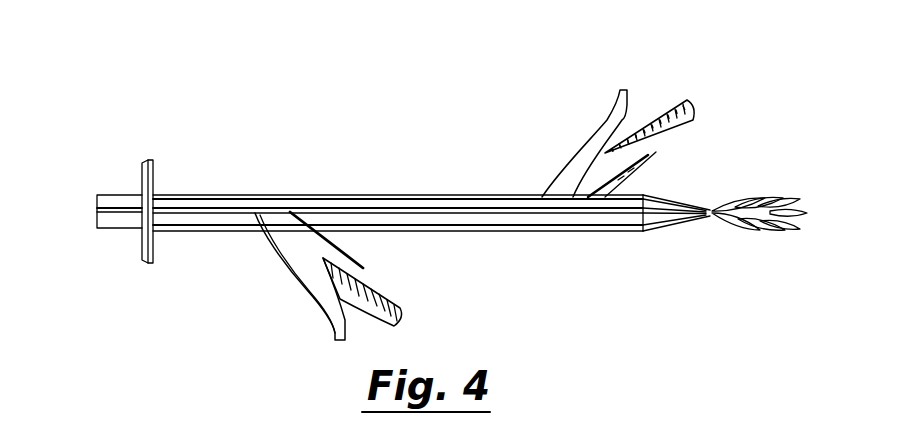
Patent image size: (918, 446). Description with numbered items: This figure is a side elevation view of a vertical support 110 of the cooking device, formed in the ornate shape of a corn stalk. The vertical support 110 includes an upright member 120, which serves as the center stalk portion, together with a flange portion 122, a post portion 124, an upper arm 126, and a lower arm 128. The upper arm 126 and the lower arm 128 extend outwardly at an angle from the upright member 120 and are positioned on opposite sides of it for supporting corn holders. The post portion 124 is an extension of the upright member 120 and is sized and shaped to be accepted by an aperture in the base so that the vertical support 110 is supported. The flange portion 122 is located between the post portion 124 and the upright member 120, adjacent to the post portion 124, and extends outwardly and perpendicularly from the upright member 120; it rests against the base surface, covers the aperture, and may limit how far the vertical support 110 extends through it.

The vertical support 110 is at (582, 91).
The upright member 120 is at (338, 198).
The flange portion 122 is at (151, 161).
The post portion 124 is at (127, 218).
The upper arm 126 is at (691, 118).
The lower arm 128 is at (388, 297).